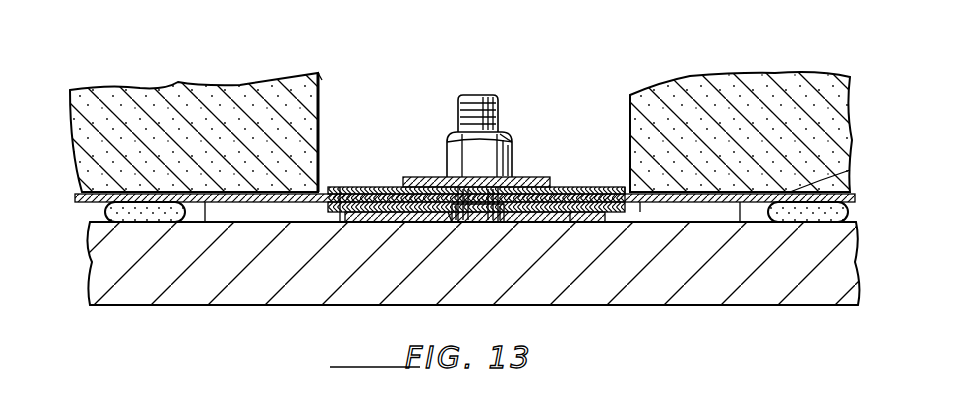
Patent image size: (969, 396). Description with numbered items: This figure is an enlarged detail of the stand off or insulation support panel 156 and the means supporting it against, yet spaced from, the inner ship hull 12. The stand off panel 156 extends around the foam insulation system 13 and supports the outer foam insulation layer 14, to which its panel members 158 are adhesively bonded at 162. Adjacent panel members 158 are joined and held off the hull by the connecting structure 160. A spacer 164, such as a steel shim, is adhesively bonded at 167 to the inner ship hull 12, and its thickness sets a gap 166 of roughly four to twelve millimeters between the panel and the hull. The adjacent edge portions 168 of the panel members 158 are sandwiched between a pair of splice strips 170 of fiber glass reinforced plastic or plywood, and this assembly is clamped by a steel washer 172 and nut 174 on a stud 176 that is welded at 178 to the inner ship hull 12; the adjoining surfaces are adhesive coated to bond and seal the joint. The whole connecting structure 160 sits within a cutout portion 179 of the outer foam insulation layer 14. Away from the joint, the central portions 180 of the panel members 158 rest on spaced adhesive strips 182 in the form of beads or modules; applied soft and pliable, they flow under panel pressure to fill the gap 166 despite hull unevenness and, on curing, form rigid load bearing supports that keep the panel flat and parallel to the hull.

The inner ship hull 12 is at (738, 305).
The foam insulation system 13 is at (200, 86).
The outer foam insulation layer 14 is at (850, 106).
The stand off panel 156 is at (638, 184).
The panel members 158 is at (246, 194).
The connecting structure 160 is at (505, 102).
The adhesive bond 162 is at (838, 178).
The spacer 164 is at (570, 222).
The gap 166 is at (665, 212).
The adhesive bond 167 is at (400, 222).
The edge portions 168 is at (366, 187).
The splice strips 170 is at (388, 187).
The steel washer 172 is at (432, 176).
The nut 174 is at (512, 146).
The stud 176 is at (480, 222).
The weld 178 is at (462, 222).
The cutout portion 179 is at (328, 72).
The central portions 180 is at (205, 222).
The adhesive strips 182 is at (105, 212).